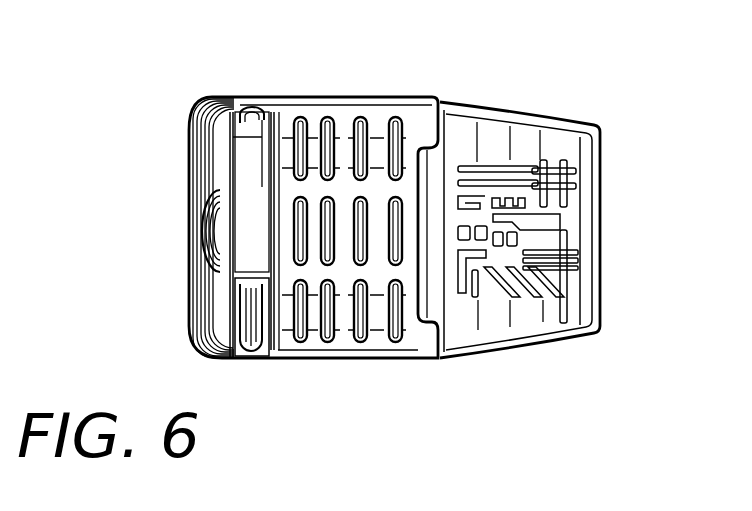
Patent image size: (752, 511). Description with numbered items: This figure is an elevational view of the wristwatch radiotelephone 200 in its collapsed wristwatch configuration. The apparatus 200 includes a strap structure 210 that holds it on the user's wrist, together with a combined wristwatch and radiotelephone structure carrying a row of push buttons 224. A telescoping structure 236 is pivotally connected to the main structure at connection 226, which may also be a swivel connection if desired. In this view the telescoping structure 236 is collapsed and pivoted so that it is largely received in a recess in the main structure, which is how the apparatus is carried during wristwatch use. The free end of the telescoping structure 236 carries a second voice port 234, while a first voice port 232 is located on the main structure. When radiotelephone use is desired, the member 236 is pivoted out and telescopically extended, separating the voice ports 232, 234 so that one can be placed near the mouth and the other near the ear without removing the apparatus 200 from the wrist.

The wristwatch radiotelephone 200 is at (678, 250).
The strap structure 210 is at (498, 138).
The push buttons 224 is at (394, 114).
The pivotal connection 226 is at (253, 98).
The first voice port 232 is at (195, 233).
The second voice port 234 is at (252, 362).
The telescoping structure 236 is at (250, 170).